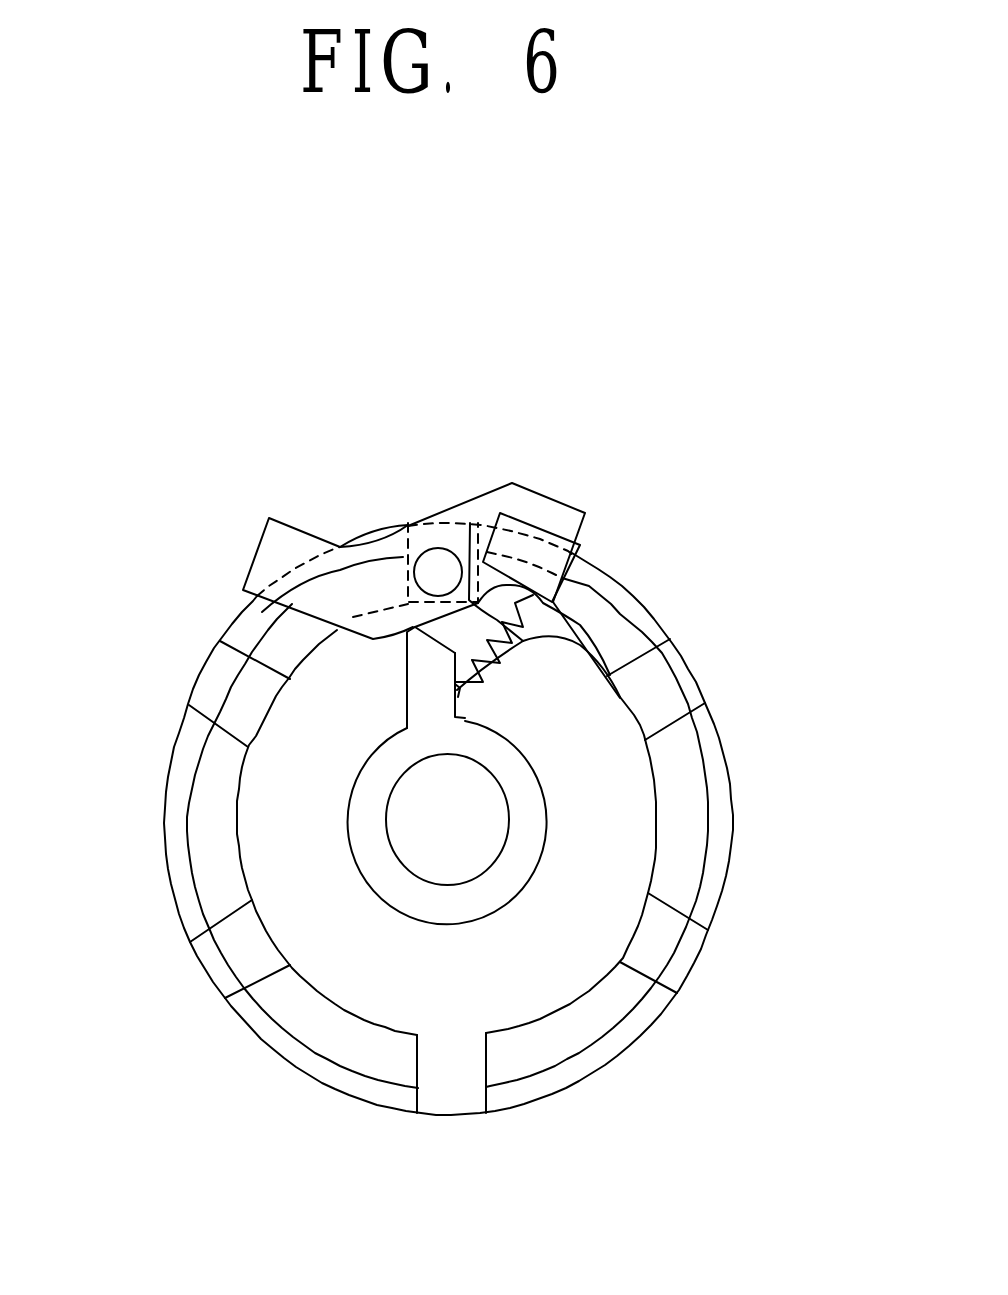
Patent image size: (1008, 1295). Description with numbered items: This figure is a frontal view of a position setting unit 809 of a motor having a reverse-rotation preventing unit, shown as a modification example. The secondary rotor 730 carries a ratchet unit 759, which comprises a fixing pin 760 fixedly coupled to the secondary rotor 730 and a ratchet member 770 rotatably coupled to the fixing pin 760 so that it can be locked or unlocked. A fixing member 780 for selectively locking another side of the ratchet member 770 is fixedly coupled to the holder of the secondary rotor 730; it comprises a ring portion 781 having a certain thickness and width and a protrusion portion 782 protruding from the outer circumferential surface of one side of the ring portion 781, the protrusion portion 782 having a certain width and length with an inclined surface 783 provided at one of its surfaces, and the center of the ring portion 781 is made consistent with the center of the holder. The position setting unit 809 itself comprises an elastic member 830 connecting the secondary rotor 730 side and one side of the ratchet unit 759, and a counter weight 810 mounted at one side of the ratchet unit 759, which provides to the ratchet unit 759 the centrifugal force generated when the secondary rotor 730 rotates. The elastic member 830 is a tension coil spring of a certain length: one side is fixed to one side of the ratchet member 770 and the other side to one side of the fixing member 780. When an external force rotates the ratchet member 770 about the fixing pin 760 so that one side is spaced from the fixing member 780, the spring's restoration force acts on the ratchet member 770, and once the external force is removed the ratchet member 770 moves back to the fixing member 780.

The secondary rotor 730 is at (703, 663).
The ratchet unit 759 is at (438, 331).
The fixing pin 760 is at (434, 541).
The ratchet member 770 is at (309, 524).
The fixing member 780 is at (378, 905).
The ring portion 781 is at (528, 832).
The protrusion portion 782 is at (413, 676).
The inclined surface 783 is at (470, 523).
The position setting unit 809 is at (780, 333).
The counter weight 810 is at (537, 553).
The elastic member 830 is at (565, 655).